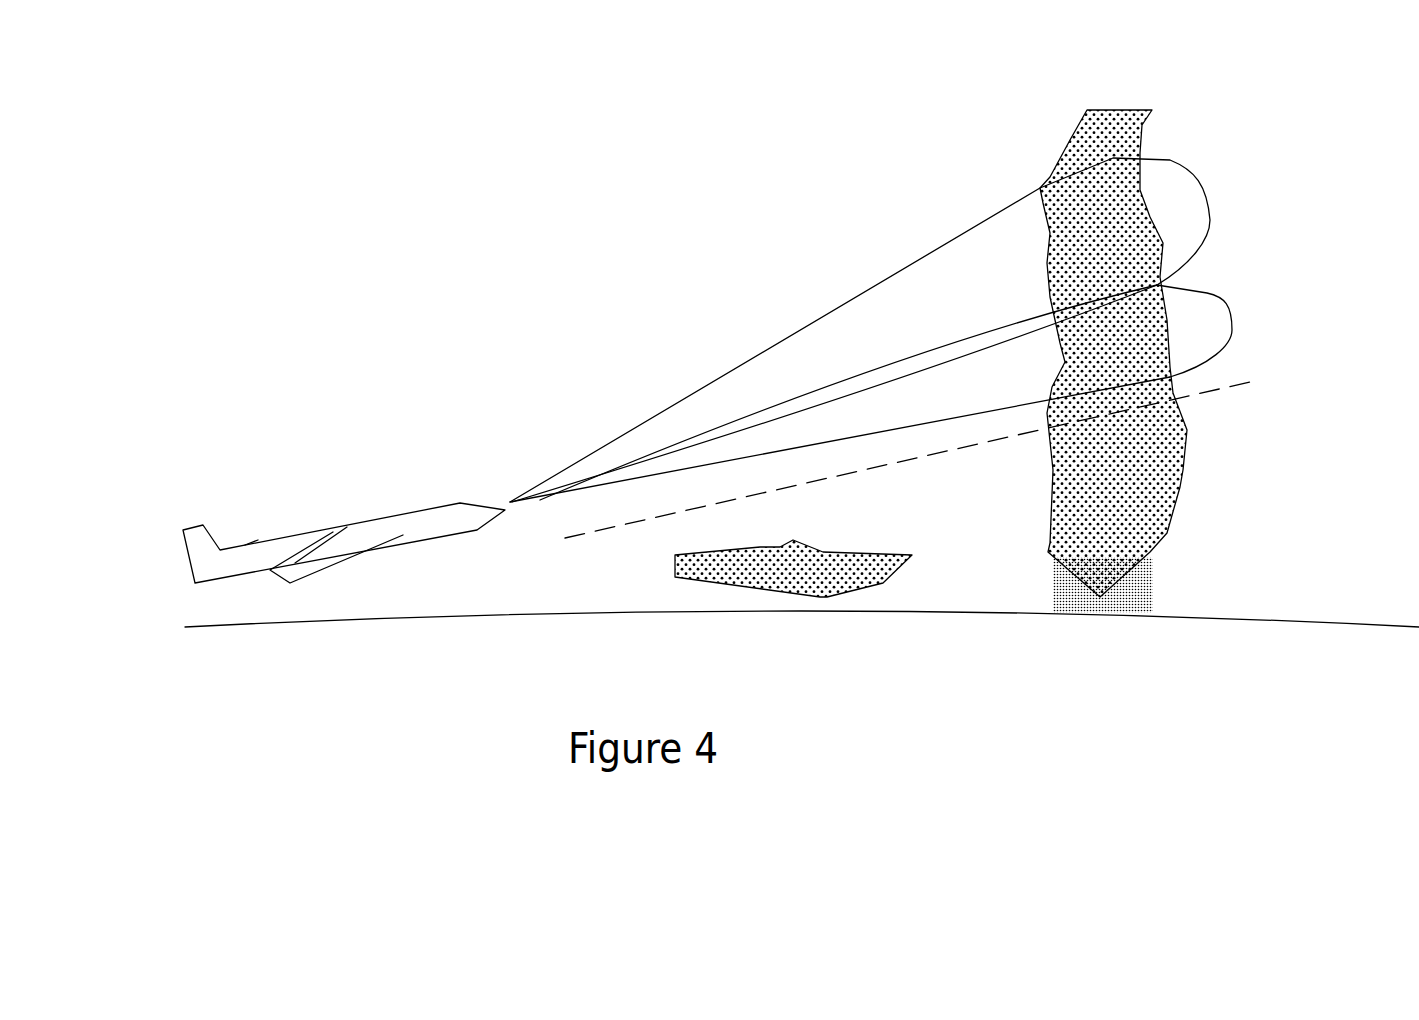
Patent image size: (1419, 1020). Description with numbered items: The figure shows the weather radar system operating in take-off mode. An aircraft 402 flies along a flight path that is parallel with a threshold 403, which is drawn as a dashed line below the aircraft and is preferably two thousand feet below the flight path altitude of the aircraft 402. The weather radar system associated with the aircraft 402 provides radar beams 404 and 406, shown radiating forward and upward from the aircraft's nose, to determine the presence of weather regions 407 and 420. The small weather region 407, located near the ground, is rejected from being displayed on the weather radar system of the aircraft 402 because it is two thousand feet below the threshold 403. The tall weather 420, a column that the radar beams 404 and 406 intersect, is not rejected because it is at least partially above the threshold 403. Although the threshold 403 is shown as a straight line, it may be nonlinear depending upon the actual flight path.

The aircraft 402 is at (187, 568).
The threshold 403 is at (560, 541).
The radar beam 404 is at (880, 270).
The radar beam 406 is at (1022, 411).
The weather region 407 is at (760, 547).
The weather 420 is at (1180, 487).